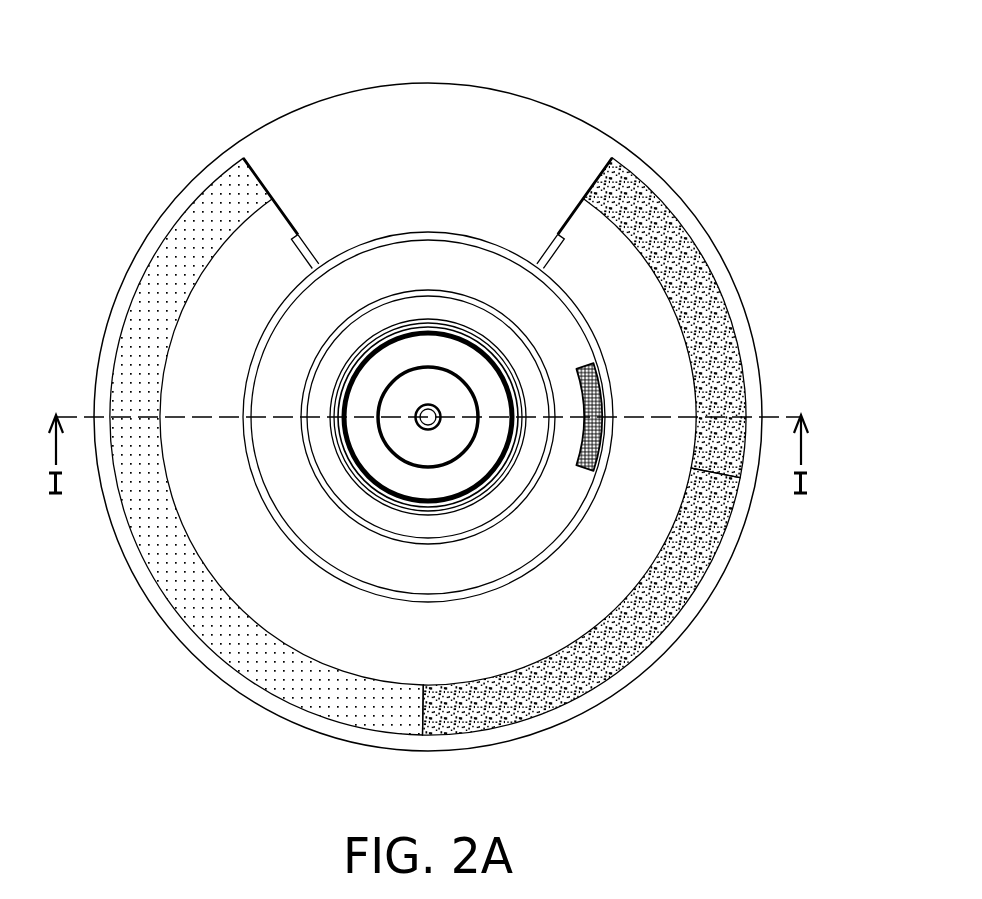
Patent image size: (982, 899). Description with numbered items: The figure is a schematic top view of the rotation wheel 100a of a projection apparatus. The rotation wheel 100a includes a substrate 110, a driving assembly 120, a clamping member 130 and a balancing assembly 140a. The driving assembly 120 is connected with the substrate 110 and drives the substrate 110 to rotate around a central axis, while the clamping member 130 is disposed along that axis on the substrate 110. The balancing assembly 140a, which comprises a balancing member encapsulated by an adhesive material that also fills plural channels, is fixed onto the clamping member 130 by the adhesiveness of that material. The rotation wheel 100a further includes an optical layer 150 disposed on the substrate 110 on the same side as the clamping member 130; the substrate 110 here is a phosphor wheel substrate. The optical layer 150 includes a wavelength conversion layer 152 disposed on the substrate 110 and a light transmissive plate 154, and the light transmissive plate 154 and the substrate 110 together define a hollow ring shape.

The rotation wheel 100a is at (757, 798).
The substrate 110 is at (572, 625).
The driving assembly 120 is at (455, 525).
The clamping member 130 is at (532, 567).
The balancing assembly 140a is at (600, 445).
The optical layer 150 is at (361, 374).
The wavelength conversion layer 152 is at (217, 193).
The light transmissive plate 154 is at (293, 160).